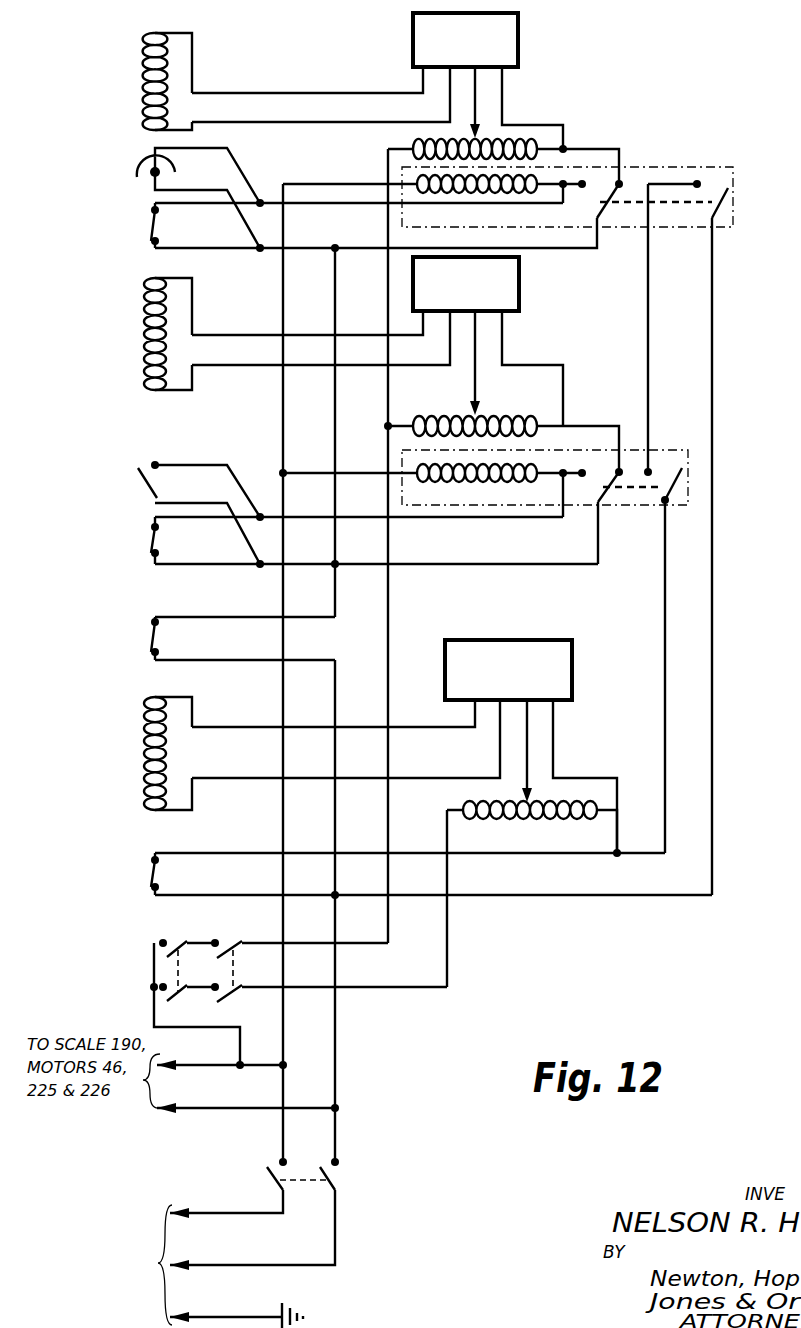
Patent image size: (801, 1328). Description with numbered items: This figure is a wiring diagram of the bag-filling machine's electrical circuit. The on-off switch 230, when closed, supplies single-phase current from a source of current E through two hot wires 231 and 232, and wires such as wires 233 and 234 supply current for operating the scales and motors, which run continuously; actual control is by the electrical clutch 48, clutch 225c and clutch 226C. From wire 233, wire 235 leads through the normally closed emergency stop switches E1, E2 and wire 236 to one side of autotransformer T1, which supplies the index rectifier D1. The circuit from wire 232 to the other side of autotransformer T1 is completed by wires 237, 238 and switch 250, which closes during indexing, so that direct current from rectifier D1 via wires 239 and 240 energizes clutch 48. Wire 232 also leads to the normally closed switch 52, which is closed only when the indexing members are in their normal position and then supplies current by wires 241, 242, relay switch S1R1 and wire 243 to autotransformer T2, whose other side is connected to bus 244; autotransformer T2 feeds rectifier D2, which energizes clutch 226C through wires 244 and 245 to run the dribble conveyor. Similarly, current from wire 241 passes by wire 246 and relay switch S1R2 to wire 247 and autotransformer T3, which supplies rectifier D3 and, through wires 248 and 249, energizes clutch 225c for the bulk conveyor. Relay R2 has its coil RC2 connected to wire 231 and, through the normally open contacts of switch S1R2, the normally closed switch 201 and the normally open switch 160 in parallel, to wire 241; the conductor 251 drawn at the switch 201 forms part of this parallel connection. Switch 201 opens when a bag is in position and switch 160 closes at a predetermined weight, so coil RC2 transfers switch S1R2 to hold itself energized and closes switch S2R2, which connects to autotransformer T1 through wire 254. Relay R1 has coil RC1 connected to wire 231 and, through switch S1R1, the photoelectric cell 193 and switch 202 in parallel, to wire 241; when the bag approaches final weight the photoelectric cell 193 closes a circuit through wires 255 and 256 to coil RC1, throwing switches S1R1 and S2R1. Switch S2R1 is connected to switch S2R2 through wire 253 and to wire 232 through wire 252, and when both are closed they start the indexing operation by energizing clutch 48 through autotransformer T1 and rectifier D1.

The clutch 226C is at (147, 106).
The bus 244 is at (318, 93).
The wire 245 is at (315, 122).
The rectifier D2 is at (477, 53).
The autotransformer T2 is at (497, 143).
The wire 243 is at (577, 148).
The coil of relay R1 RC1 is at (400, 180).
The relay switch S1R1 is at (616, 205).
The relay switch S2R1 is at (727, 200).
The relay R1 is at (606, 228).
The wire 253 is at (650, 332).
The photoelectric cell 193 is at (151, 175).
The wire 256 is at (327, 203).
The switch 202 is at (152, 230).
The wire 255 is at (275, 250).
The wire 242 is at (367, 247).
The clutch 225c is at (147, 360).
The wire 248 is at (265, 335).
The wire 249 is at (264, 365).
The rectifier D3 is at (479, 297).
The autotransformer T3 is at (488, 420).
The wire 247 is at (575, 426).
The coil of relay R2 RC2 is at (408, 468).
The relay switch S1R2 is at (609, 482).
The relay R2 is at (658, 502).
The relay switch S2R2 is at (722, 489).
The wire 254 is at (663, 668).
The wire 246 is at (522, 563).
The switch 160 is at (147, 480).
The wire 252 is at (328, 515).
The switch 201 is at (150, 540).
The conductor 251 is at (222, 565).
The wire 241 is at (245, 617).
The switch 52 is at (147, 633).
The hot wire 232 is at (337, 1032).
The clutch 48 is at (143, 775).
The wire 239 is at (263, 727).
The wire 240 is at (265, 778).
The index rectifier D1 is at (522, 682).
The autotransformer T1 is at (488, 806).
The wire 238 is at (262, 851).
The switch 250 is at (150, 863).
The wire 237 is at (253, 897).
The wire 236 is at (449, 956).
The wire 235 is at (154, 1000).
The emergency stop switch E1 is at (182, 943).
The emergency stop switch E2 is at (219, 942).
The hot wire 231 is at (283, 1000).
The wire 233 is at (198, 1067).
The wire 234 is at (207, 1108).
The on-off switch 230 is at (338, 1188).
The source of current E is at (214, 1266).